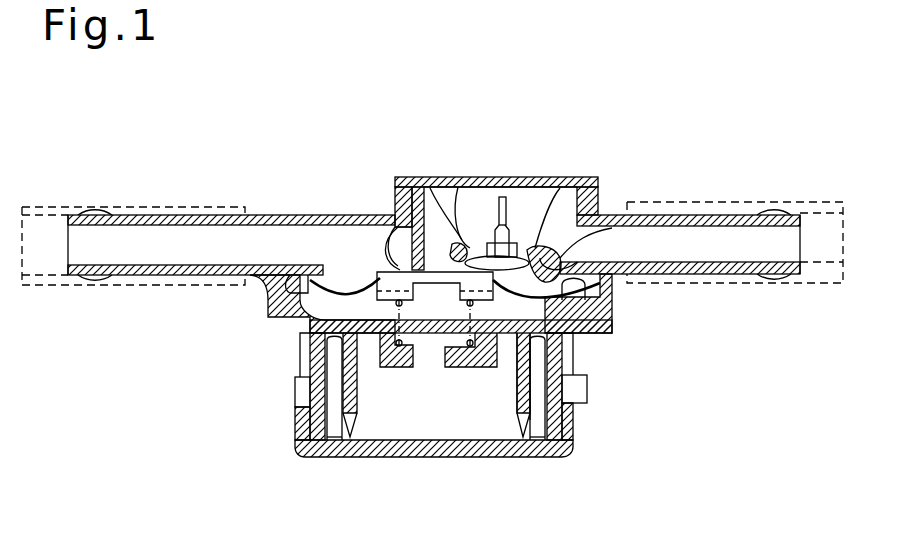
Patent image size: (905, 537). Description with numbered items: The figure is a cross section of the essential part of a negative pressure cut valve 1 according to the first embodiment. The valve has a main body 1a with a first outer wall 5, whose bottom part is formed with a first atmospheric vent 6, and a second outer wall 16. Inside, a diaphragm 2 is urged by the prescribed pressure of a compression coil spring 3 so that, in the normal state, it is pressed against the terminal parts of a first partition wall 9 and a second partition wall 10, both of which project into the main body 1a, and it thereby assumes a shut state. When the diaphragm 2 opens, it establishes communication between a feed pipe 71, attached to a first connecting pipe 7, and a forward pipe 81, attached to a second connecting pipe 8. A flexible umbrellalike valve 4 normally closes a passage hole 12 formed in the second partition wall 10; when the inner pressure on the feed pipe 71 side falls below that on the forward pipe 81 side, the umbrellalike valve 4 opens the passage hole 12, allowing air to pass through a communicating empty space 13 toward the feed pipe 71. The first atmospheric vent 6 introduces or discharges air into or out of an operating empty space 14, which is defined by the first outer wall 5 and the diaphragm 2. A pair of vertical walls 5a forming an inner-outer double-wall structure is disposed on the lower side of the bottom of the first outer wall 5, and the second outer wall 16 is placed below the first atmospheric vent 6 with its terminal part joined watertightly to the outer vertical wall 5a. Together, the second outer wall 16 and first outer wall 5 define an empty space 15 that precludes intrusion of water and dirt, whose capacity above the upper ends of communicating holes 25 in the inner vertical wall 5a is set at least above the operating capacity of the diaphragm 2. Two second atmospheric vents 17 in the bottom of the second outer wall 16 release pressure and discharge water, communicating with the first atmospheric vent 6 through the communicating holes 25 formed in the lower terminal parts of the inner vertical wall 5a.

The negative pressure cut valve 1 is at (484, 140).
The main body 1a is at (472, 213).
The diaphragm 2 is at (392, 222).
The compression coil spring 3 is at (469, 348).
The flexible umbrellalike valve 4 is at (505, 222).
The first outer wall 5 is at (540, 328).
The vertical walls 5a is at (310, 360).
The first atmospheric vent 6 is at (449, 342).
The first connecting pipe 7 is at (159, 273).
The second connecting pipe 8 is at (730, 215).
The first partition wall 9 is at (402, 235).
The second partition wall 10 is at (432, 228).
The passage hole 12 is at (540, 220).
The communicating empty space 13 is at (598, 230).
The operating empty space 14 is at (421, 325).
The empty space for precluding intrusion 15 is at (548, 412).
The second outer wall 16 is at (467, 456).
The second atmospheric vents 17 is at (322, 452).
The communicating holes 25 is at (348, 440).
The feed pipe 71 is at (49, 285).
The forward pipe 81 is at (817, 283).